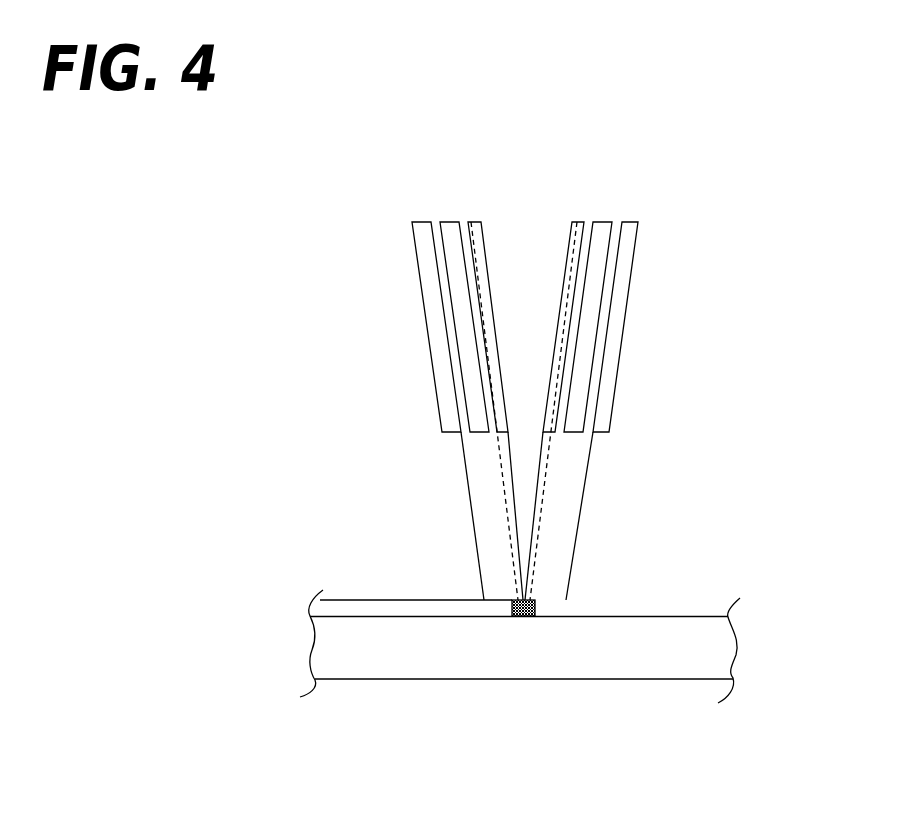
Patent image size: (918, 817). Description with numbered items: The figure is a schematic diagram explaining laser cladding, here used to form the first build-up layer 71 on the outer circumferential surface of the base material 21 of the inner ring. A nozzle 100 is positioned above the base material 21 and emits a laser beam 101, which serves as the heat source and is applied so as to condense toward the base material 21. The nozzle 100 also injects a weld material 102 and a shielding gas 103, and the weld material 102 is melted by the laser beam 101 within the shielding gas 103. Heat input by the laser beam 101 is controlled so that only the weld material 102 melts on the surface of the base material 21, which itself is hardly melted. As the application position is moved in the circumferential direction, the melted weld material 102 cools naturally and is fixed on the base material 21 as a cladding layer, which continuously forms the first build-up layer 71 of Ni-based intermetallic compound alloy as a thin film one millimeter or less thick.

The nozzle 100 is at (634, 254).
The laser beam 101 is at (528, 468).
The weld material 102 is at (542, 517).
The shielding gas 103 is at (477, 483).
The first build-up layer 71 is at (353, 600).
The base material 21 is at (508, 668).